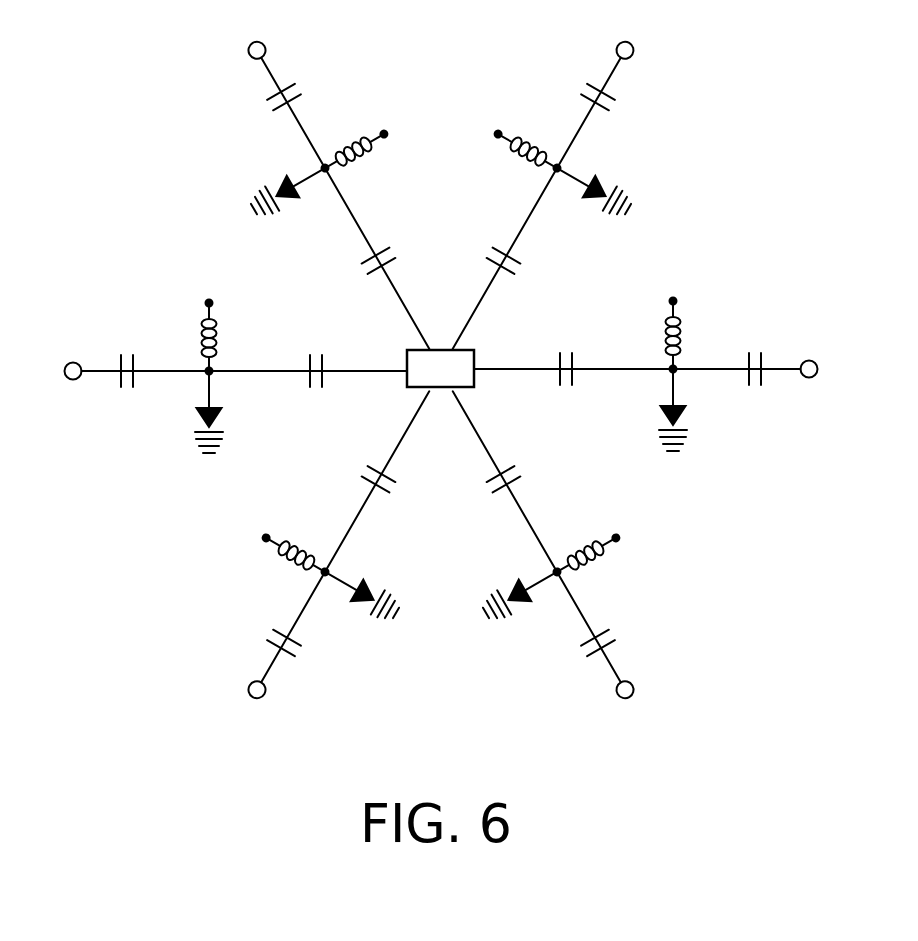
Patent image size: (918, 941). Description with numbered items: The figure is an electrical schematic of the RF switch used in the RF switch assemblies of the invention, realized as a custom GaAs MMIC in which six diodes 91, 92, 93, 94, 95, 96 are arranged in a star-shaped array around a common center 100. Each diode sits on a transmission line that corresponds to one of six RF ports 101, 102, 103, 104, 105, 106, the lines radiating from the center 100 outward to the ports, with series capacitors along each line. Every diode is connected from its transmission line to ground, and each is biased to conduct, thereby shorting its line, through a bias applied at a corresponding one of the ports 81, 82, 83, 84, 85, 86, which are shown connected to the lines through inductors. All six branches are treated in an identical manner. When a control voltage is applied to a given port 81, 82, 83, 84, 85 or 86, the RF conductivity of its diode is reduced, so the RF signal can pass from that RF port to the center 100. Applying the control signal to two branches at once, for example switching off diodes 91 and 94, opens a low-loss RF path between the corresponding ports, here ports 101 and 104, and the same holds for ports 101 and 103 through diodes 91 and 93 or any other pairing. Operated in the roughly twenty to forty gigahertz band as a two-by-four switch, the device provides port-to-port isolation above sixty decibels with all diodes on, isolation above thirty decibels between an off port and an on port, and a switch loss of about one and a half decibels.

The center 100 is at (441, 350).
The bias port 81 is at (382, 131).
The bias port 82 is at (499, 131).
The bias port 83 is at (677, 302).
The bias port 84 is at (620, 539).
The bias port 85 is at (262, 539).
The bias port 86 is at (205, 303).
The diode 91 is at (290, 204).
The diode 92 is at (591, 200).
The diode 93 is at (662, 412).
The diode 94 is at (531, 606).
The diode 95 is at (357, 606).
The diode 96 is at (216, 421).
The RF port 101 is at (249, 50).
The RF port 102 is at (633, 48).
The RF port 103 is at (809, 378).
The RF port 104 is at (634, 689).
The RF port 105 is at (249, 690).
The RF port 106 is at (73, 380).